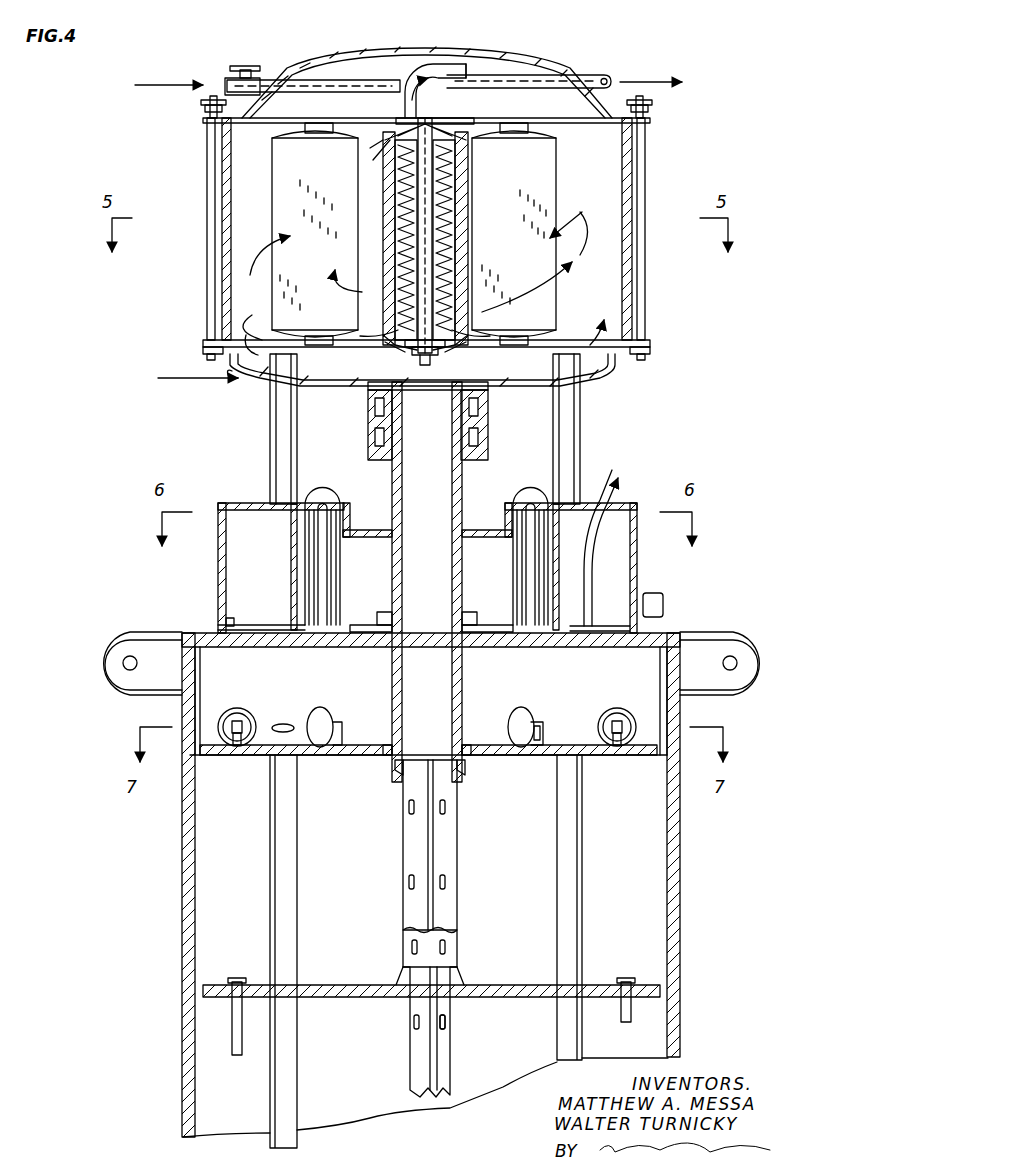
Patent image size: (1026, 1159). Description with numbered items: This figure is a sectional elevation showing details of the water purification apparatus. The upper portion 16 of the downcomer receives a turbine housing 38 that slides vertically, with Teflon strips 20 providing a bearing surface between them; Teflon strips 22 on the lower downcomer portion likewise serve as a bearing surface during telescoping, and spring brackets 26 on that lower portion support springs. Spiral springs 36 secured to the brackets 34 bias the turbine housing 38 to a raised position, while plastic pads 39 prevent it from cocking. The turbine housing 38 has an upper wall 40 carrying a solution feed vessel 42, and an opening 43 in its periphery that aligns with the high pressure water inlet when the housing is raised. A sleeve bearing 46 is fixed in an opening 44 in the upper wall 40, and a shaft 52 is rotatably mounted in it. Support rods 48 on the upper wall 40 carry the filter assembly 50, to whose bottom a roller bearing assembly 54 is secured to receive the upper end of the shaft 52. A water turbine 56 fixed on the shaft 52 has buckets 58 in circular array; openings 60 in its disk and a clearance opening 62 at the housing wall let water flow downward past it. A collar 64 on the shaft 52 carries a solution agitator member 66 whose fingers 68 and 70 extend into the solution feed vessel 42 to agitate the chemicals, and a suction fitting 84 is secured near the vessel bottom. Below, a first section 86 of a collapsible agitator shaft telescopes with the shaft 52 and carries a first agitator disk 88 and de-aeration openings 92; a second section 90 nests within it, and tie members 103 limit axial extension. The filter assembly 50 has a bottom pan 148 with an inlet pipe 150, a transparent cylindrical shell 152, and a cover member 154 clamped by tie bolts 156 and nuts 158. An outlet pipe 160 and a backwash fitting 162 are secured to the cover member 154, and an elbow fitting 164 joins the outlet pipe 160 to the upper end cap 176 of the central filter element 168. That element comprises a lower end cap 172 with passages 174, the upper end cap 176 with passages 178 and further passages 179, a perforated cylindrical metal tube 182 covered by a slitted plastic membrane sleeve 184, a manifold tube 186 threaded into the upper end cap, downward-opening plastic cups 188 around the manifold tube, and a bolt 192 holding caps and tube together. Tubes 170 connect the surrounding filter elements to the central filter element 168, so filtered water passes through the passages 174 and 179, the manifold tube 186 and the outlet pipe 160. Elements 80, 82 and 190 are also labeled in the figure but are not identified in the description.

The upper portion 16 is at (680, 900).
The Teflon strips 20 is at (278, 860).
The Teflon strips 22 is at (722, 412).
The spring brackets 26 is at (638, 578).
The brackets 34 is at (130, 640).
The spiral springs 36 is at (175, 633).
The turbine housing 38 is at (258, 692).
The pads 39 is at (664, 606).
The upper wall 40 is at (345, 648).
The solution feed vessel 42 is at (262, 577).
The opening 43 is at (292, 722).
The opening 44 is at (393, 650).
The sleeve bearing 46 is at (384, 626).
The support rods 48 is at (280, 480).
The filter assembly 50 is at (195, 318).
The shaft 52 is at (440, 697).
The roller bearing assembly 54 is at (480, 422).
The water turbine 56 is at (466, 745).
The buckets 58 is at (598, 716).
The openings 60 is at (525, 755).
The clearance opening 62 is at (655, 756).
The collar 64 is at (466, 514).
The solution agitator member 66 is at (540, 492).
The finger 68 is at (500, 628).
The finger 70 is at (546, 648).
The U-tube 80 is at (248, 630).
The fitting 82 is at (210, 628).
The suction fitting 84 is at (586, 622).
The first section of agitator shaft 86 is at (450, 850).
The first agitator disk 88 is at (530, 985).
The second section of agitator shaft 90 is at (448, 1050).
The de-aeration openings 92 is at (446, 1020).
The tie members 103 is at (232, 1012).
The bottom pan 148 is at (320, 380).
The inlet pipe 150 is at (238, 380).
The cylindrical shell 152 is at (230, 208).
The cover member 154 is at (500, 58).
The tie bolts 156 is at (212, 190).
The nuts 158 is at (202, 112).
The outlet pipe 160 is at (585, 75).
The backwash fitting 162 is at (330, 78).
The elbow fitting 164 is at (428, 62).
The central filter element 168 is at (450, 116).
The tubes 170 is at (340, 118).
The lower end cap 172 is at (395, 345).
The passages 174 is at (445, 350).
The upper end cap 176 is at (470, 128).
The passages 178 is at (440, 126).
The passages 179 is at (383, 142).
The perforated cylindrical metal tube 182 is at (445, 178).
The plastic membrane sleeve 184 is at (456, 198).
The manifold tube 186 is at (418, 172).
The cups 188 is at (440, 232).
The lower arm 190 is at (466, 338).
The bolt 192 is at (412, 352).